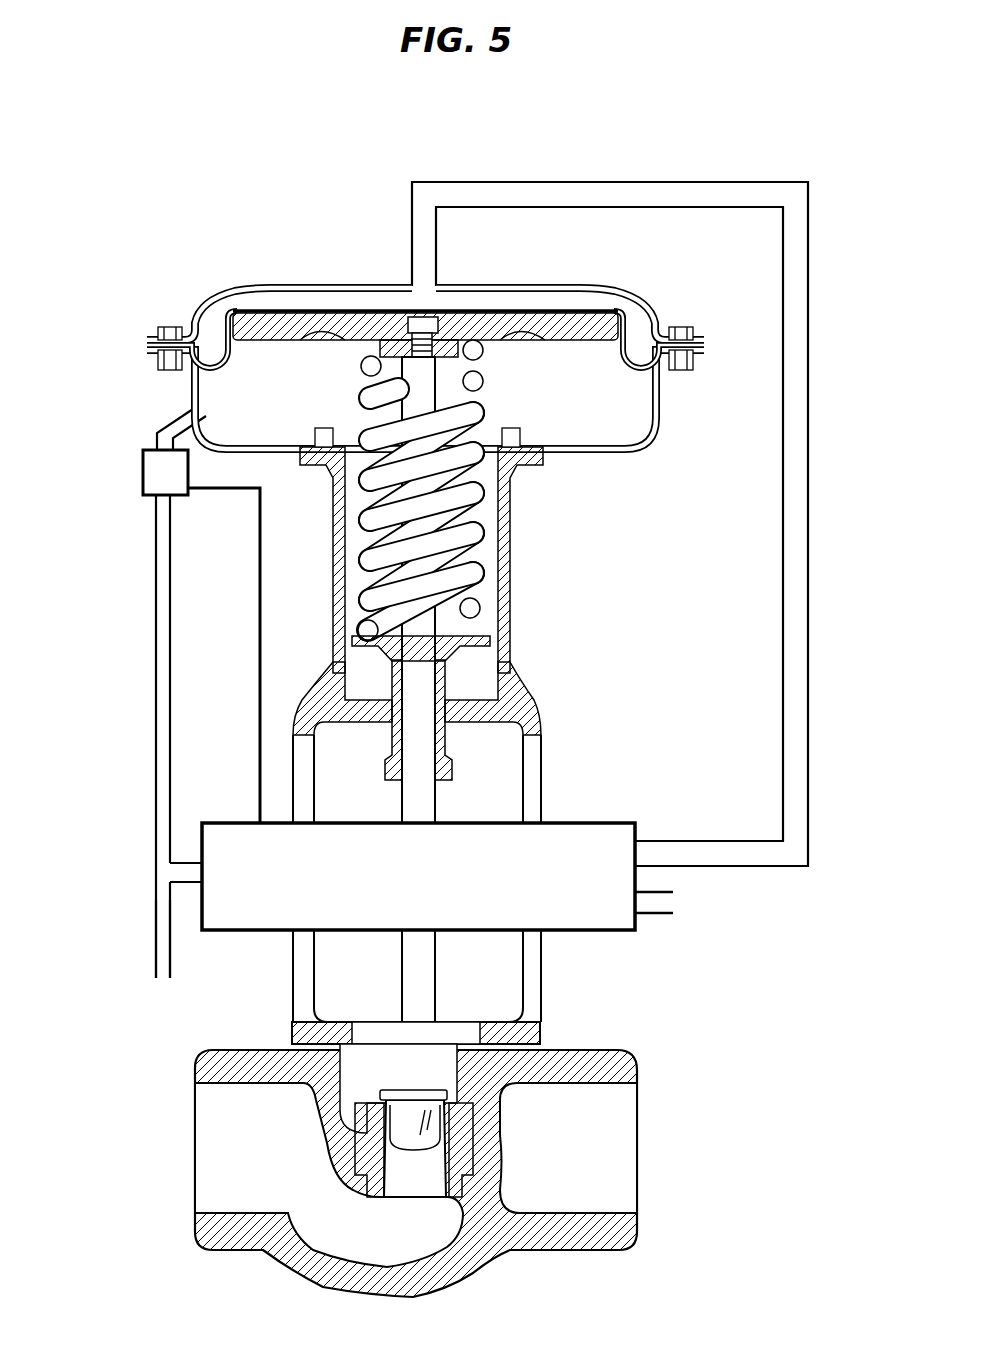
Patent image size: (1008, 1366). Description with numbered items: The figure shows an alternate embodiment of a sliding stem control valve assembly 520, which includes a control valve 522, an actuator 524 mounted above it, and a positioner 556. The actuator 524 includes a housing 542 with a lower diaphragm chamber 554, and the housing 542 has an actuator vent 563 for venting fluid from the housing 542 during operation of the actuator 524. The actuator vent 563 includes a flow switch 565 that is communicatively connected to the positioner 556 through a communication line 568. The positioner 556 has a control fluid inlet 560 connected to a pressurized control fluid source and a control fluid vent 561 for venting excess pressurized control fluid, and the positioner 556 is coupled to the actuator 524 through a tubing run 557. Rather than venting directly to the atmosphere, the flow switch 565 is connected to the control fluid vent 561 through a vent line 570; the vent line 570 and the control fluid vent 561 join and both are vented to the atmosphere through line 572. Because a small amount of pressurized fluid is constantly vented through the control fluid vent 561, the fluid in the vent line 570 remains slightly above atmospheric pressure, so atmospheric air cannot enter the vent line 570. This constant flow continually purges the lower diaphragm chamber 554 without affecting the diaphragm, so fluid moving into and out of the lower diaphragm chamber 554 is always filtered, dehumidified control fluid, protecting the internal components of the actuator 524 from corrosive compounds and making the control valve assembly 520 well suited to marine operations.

The control valve assembly 520 is at (845, 312).
The control valve 522 is at (697, 1053).
The actuator 524 is at (100, 235).
The housing 542 is at (535, 286).
The lower diaphragm chamber 554 is at (617, 412).
The positioner 556 is at (622, 755).
The pneumatic tubing 557 is at (735, 180).
The control fluid inlet 560 is at (650, 914).
The control fluid vent 561 is at (185, 858).
The actuator vent 563 is at (192, 418).
The flow switch 565 is at (143, 470).
The communication line 568 is at (262, 594).
The vent line 570 is at (156, 677).
The line 572 is at (155, 930).